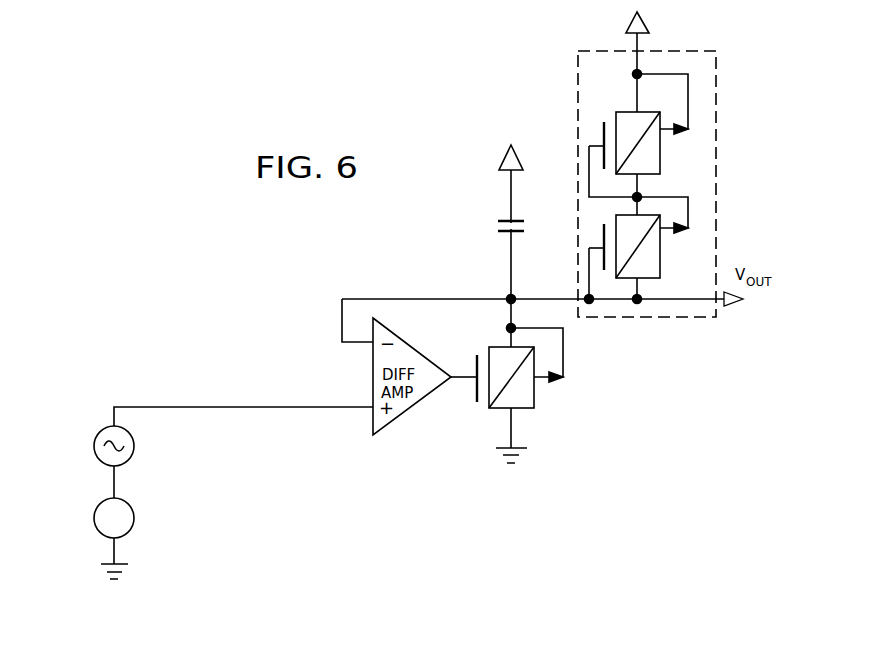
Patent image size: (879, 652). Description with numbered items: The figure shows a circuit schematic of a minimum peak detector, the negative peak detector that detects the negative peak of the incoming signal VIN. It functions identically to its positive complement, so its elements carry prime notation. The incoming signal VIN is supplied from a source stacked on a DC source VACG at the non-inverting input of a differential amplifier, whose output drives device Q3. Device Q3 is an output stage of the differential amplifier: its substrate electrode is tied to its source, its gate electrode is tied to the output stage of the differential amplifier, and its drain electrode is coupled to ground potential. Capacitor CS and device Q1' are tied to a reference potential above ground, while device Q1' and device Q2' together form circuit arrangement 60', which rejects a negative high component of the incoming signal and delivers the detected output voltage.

The circuit arrangement 60' is at (673, 164).
The device Q1' is at (640, 145).
The device Q2' is at (640, 250).
The device Q3 is at (522, 379).
The capacitor Cs' CS is at (491, 222).
The incoming signal VIN' VIN is at (210, 436).
The AC ground DC voltage source VACG is at (95, 522).